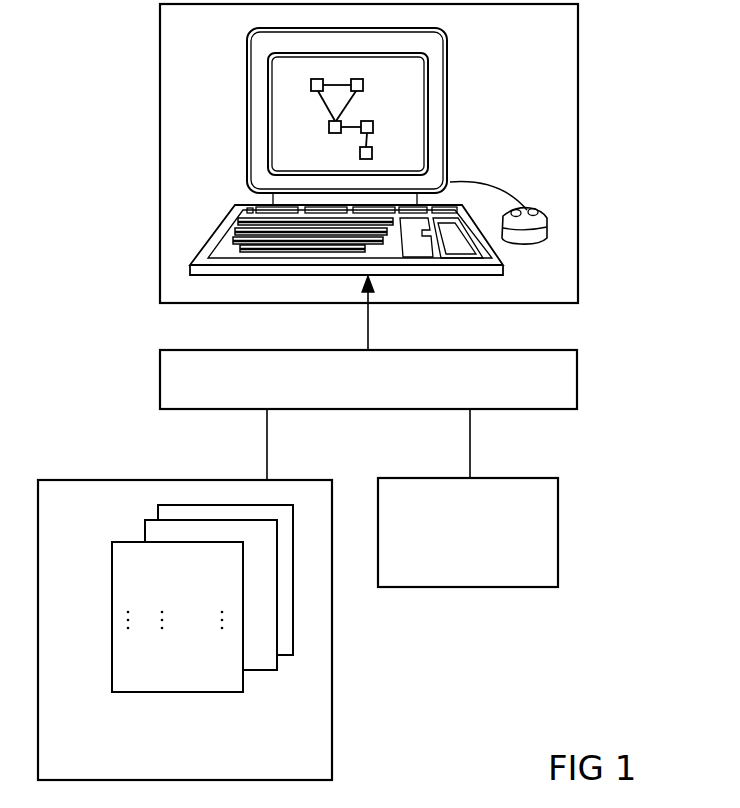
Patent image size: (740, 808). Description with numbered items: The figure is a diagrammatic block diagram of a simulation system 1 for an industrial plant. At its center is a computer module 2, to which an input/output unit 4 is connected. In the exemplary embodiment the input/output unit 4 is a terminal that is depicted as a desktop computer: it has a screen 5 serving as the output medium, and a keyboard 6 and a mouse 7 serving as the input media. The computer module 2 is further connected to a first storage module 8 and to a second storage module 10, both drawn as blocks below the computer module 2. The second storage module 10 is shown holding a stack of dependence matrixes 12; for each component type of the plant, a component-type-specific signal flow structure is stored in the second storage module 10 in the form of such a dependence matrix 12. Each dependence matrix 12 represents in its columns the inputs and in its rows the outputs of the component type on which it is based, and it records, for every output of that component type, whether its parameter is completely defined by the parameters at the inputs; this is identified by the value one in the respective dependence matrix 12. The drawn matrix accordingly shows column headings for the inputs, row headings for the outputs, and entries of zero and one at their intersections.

The simulation system 1 is at (610, 306).
The computer module 2 is at (577, 378).
The input/output unit 4 is at (578, 131).
The screen 5 is at (435, 112).
The keyboard 6 is at (490, 257).
The mouse 7 is at (540, 229).
The first storage module 8 is at (558, 535).
The second storage module 10 is at (333, 683).
The dependence matrix 12 is at (158, 512).